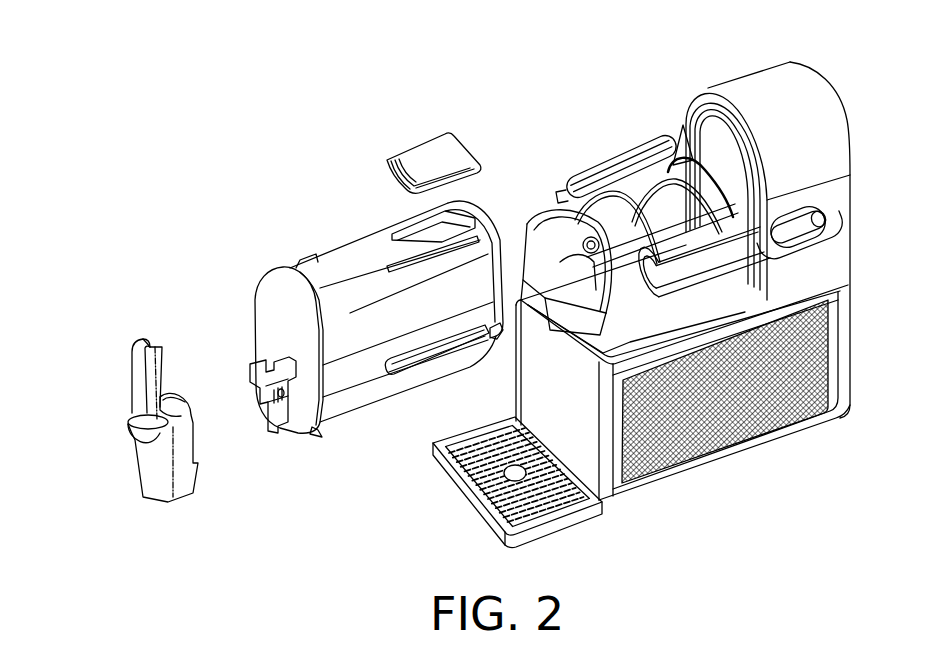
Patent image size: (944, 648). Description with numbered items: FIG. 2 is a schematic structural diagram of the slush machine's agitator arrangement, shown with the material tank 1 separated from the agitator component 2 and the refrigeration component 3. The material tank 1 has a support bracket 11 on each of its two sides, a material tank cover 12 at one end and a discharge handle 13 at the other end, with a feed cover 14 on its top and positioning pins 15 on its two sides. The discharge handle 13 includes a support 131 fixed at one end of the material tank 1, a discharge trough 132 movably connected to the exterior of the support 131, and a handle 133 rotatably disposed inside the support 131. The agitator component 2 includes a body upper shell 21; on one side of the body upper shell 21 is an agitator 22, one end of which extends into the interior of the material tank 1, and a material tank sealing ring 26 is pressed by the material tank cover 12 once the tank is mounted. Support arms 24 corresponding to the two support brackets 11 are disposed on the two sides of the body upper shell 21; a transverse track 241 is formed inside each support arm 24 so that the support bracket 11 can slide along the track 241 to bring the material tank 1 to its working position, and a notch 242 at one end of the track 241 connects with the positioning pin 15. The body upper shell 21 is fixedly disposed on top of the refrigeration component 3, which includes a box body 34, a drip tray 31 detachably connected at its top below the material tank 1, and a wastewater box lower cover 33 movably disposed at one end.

The material tank 1 is at (342, 266).
The support bracket 11 is at (410, 366).
The material tank cover 12 is at (714, 143).
The discharge handle 13 is at (128, 370).
The support 131 is at (268, 362).
The discharge trough 132 is at (172, 460).
The handle 133 is at (146, 392).
The feed cover 14 is at (446, 158).
The positioning pin 15 is at (497, 338).
The agitator component 2 is at (838, 96).
The body upper shell 21 is at (820, 160).
The agitator 22 is at (546, 206).
The support arm 24 is at (616, 152).
The track 241 is at (582, 190).
The notch 242 is at (660, 158).
The material tank sealing ring 26 is at (700, 157).
The refrigeration component 3 is at (658, 494).
The drip tray 31 is at (762, 430).
The wastewater box lower cover 33 is at (566, 526).
The box body 34 is at (850, 330).